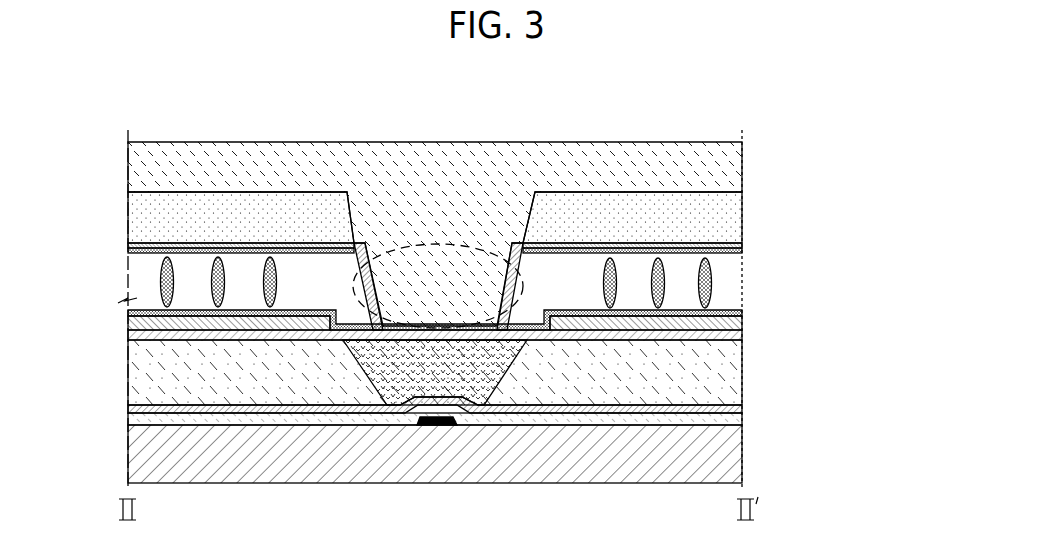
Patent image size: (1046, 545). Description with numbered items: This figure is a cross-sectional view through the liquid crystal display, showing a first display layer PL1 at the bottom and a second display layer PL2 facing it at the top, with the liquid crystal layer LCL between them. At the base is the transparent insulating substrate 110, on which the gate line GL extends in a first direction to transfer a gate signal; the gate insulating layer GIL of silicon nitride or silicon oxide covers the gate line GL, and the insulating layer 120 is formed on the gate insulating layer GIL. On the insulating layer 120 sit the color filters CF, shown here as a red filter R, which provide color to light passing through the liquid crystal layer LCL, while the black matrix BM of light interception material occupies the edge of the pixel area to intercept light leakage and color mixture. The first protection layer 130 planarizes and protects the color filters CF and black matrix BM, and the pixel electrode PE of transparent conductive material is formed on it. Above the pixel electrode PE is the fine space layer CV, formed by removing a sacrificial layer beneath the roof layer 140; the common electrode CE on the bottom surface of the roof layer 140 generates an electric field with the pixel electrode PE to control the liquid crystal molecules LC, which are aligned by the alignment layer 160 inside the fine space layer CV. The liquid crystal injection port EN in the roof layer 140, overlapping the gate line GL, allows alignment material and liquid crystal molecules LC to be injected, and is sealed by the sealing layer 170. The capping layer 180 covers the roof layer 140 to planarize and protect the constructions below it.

The substrate 110 is at (468, 454).
The insulating layer 120 is at (740, 410).
The first protection layer 130 is at (738, 337).
The roof layer 140 is at (742, 207).
The alignment layer 160 is at (742, 252).
The sealing layer 170 is at (373, 283).
The capping layer 180 is at (740, 165).
The gate line GL is at (440, 425).
The gate insulating layer GIL is at (740, 420).
The color filter CF is at (465, 372).
The red filter R is at (435, 372).
The black matrix BM is at (435, 372).
The pixel electrode PE is at (663, 322).
The common electrode CE is at (742, 245).
The liquid crystal molecules LC is at (463, 322).
The liquid crystal layer LCL is at (722, 272).
The fine space layer CV is at (479, 296).
The liquid crystal injection port EN is at (437, 247).
The first display layer PL1 is at (499, 430).
The second display layer PL2 is at (497, 234).